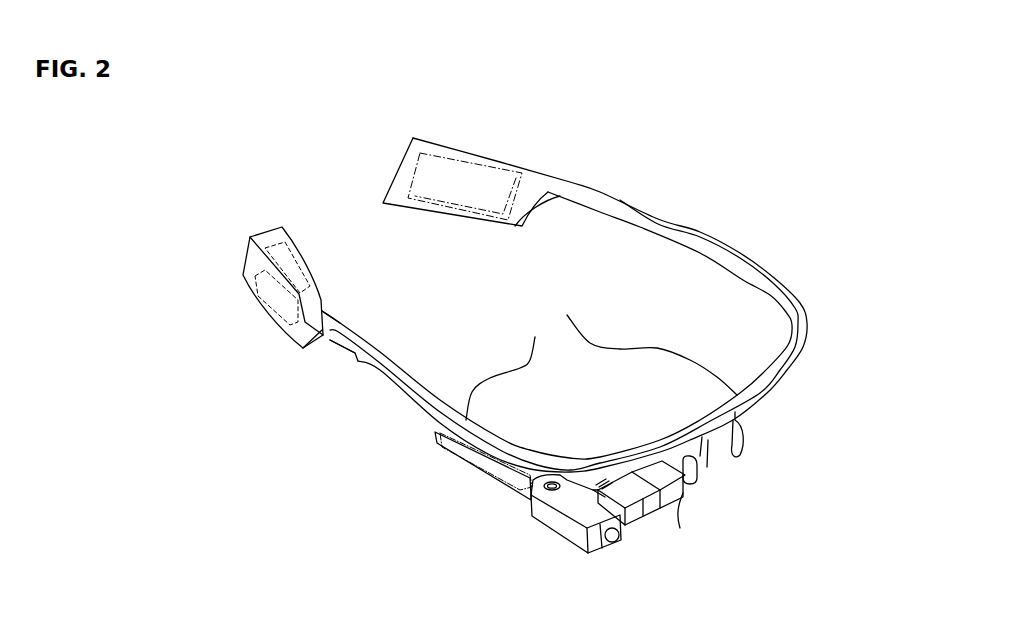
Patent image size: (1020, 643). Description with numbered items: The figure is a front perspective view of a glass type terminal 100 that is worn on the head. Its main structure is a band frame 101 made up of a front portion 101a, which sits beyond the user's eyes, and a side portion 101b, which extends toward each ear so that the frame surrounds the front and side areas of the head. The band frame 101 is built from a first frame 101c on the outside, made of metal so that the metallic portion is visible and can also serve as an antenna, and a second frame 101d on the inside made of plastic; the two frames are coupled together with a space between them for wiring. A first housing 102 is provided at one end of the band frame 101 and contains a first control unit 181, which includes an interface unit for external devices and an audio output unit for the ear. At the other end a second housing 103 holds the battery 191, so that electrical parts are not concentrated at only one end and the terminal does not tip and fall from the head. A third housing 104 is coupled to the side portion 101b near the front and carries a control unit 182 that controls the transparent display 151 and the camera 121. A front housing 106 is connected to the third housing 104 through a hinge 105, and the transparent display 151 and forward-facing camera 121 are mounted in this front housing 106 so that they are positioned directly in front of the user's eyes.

The glass type terminal 100 is at (301, 106).
The band frame 101 is at (581, 265).
The front portion 101a is at (642, 345).
The side portion 101b is at (733, 263).
The first frame 101c is at (370, 372).
The second frame 101d is at (390, 371).
The first housing 102 is at (262, 266).
The first control unit 181 is at (260, 263).
The second housing 103 is at (451, 164).
The battery 191 is at (420, 173).
The third housing 104 is at (470, 473).
The control unit 182 is at (455, 457).
The hinge 105 is at (547, 485).
The front housing 106 is at (538, 538).
The camera 121 is at (613, 542).
The transparent display 151 is at (680, 497).